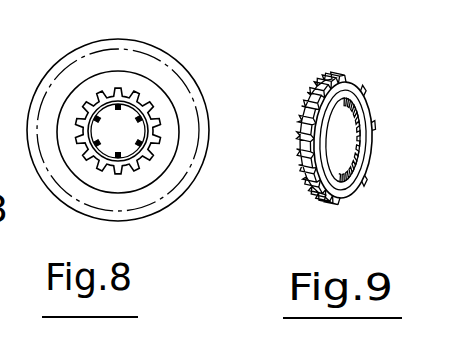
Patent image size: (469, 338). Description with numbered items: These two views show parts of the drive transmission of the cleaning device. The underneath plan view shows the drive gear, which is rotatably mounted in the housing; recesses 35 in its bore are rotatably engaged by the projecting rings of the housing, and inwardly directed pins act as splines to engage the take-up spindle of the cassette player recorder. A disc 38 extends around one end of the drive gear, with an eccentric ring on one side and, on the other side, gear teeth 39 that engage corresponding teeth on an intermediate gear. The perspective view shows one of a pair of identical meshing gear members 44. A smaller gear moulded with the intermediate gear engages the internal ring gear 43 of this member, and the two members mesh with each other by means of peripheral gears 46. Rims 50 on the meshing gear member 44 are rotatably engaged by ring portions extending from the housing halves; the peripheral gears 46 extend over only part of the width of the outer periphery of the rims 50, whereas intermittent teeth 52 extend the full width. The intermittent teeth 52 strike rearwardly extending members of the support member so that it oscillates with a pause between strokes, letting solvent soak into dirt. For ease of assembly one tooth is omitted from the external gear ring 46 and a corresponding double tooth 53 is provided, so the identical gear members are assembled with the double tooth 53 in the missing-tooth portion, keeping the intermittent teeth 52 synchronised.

In FIG. 8, the recesses 35 is at (132, 93).
In FIG. 8, the gear teeth 39 is at (152, 122).
In FIG. 8, the disc 38 is at (181, 196).
In FIG. 9, the meshing gear member 44 is at (383, 63).
In FIG. 9, the intermittent teeth 52 is at (376, 126).
In FIG. 9, the rims 50 is at (366, 180).
In FIG. 9, the peripheral gears 46 is at (297, 132).
In FIG. 9, the double tooth 53 is at (318, 200).
In FIG. 9, the internal ring gear 43 is at (346, 198).